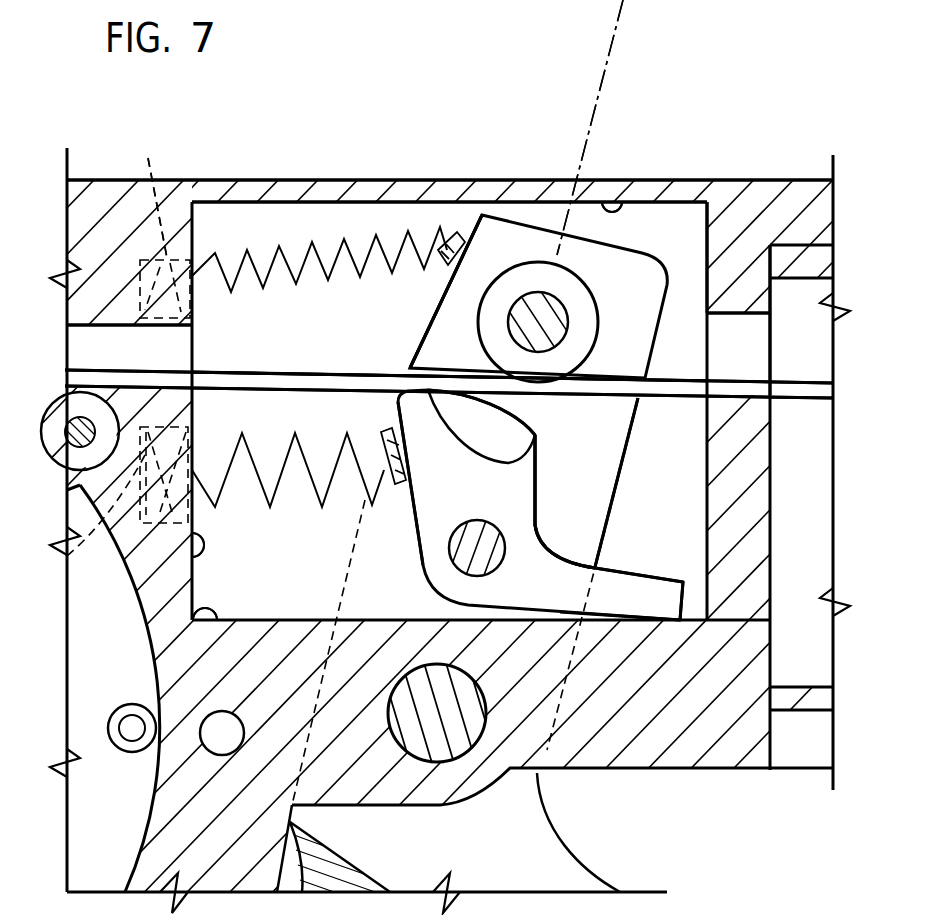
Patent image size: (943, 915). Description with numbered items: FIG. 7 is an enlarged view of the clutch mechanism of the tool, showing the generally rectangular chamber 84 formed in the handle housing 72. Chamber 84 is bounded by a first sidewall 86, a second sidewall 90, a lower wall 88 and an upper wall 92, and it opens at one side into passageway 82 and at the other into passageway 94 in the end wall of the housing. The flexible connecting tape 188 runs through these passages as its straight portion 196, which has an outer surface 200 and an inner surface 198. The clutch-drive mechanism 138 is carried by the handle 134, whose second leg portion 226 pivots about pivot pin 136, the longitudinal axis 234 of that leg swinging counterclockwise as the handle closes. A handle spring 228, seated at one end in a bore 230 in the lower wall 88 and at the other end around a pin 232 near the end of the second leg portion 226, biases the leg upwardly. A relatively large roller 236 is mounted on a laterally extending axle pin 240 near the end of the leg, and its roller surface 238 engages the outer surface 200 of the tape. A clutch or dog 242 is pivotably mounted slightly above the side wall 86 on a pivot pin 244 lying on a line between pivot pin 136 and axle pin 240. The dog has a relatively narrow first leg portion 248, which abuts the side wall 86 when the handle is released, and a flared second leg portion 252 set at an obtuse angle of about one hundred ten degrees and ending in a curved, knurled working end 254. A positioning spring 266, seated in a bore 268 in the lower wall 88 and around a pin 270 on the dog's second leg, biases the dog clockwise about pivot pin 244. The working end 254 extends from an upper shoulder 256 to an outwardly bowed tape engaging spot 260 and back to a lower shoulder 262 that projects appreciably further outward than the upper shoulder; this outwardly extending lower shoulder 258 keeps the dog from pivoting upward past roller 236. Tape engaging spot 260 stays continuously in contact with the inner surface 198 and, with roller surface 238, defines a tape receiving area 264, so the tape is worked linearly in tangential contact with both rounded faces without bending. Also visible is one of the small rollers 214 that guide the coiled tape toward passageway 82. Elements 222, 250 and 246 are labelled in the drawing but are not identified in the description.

The handle housing 72 is at (168, 170).
The bore 230 is at (148, 158).
The rectangular chamber 84 is at (243, 215).
The pin 232 is at (446, 232).
The handle spring 228 is at (300, 200).
The clutch-drive mechanism 138 is at (537, 245).
The roller 236 is at (525, 272).
The roller surface 238 is at (496, 283).
The axle pin 240 is at (510, 315).
The longitudinal axis 234 is at (600, 97).
The second sidewall 90 is at (623, 203).
The upper wall 92 is at (703, 235).
The second leg portion 226 is at (665, 330).
The passageway 94 is at (748, 333).
The connecting tape 188 is at (305, 370).
The tape receiving area 264 is at (476, 356).
The passageway 82 is at (107, 352).
The outer surface 200 is at (110, 368).
The straight portion 196 is at (105, 378).
The inner surface 198 is at (100, 393).
The positioning spring 266 is at (283, 457).
The lower shoulder 262 is at (396, 396).
The lower shoulder 258 is at (489, 404).
The upper shoulder 256 is at (536, 431).
The working end 254 is at (538, 454).
The tape engaging spot 260 is at (496, 487).
The second leg portion 252 is at (548, 486).
The pawl tail 250 is at (673, 547).
The pivot pin 222 is at (80, 470).
The pin 270 is at (398, 517).
The dog 242 is at (449, 545).
The pivot pin 244 is at (419, 558).
The bore 268 is at (67, 556).
The lower wall 88 is at (192, 533).
The first sidewall 86 is at (205, 608).
The roller 214 is at (108, 728).
The pivot pin 136 is at (472, 727).
The handle 134 is at (540, 868).
The first leg portion 248 is at (670, 598).
The tail bottom face 246 is at (608, 620).